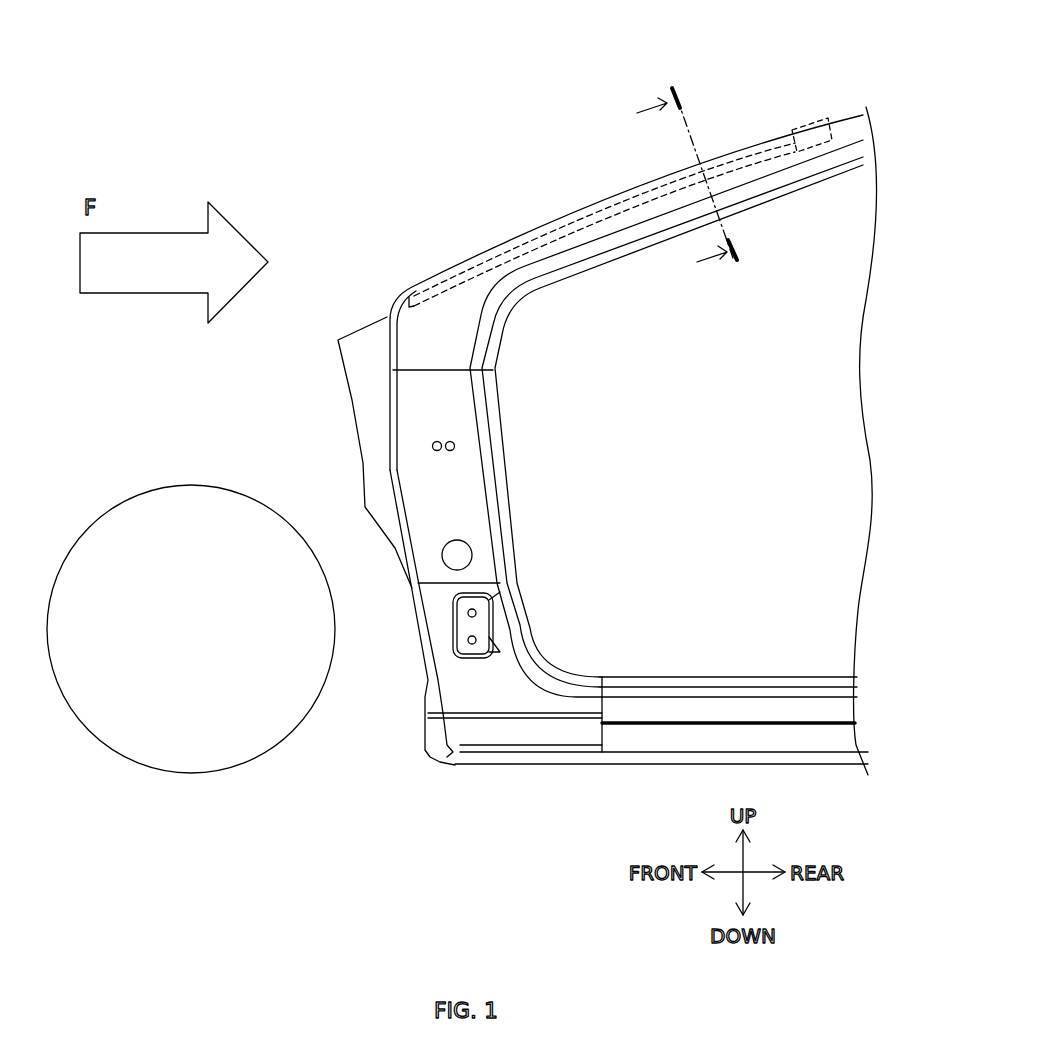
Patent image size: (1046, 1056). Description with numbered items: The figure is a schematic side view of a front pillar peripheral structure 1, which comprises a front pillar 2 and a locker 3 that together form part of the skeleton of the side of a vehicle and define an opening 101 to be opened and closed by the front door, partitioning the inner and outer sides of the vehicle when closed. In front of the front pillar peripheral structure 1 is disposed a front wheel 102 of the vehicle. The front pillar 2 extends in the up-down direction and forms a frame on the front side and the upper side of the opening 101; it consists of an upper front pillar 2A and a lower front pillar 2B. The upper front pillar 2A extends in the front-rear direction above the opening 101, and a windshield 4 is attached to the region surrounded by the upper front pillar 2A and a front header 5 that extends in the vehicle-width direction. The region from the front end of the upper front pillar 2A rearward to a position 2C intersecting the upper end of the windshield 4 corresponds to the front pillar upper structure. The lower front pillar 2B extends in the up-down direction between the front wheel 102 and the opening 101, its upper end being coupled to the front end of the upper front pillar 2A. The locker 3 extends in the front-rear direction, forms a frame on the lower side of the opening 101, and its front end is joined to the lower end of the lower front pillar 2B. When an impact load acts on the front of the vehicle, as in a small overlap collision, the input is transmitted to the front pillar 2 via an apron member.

The front pillar peripheral structure 1 is at (599, 411).
The front pillar 2 is at (626, 406).
The upper front pillar 2A is at (748, 146).
The lower front pillar 2B is at (465, 517).
The position intersecting the upper end of the windshield 2C is at (795, 129).
The locker 3 is at (711, 676).
The windshield 4 is at (528, 245).
The front header 5 is at (837, 125).
The opening 101 is at (596, 260).
The front wheel 102 is at (130, 498).